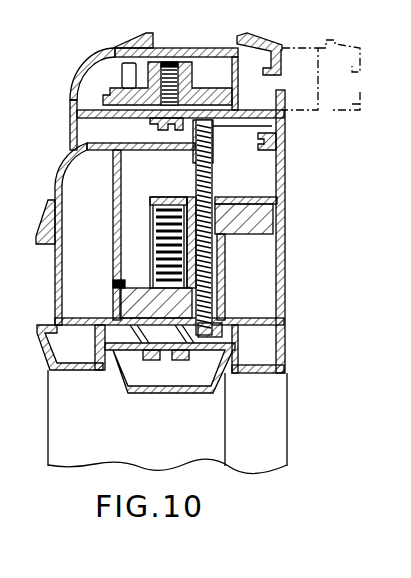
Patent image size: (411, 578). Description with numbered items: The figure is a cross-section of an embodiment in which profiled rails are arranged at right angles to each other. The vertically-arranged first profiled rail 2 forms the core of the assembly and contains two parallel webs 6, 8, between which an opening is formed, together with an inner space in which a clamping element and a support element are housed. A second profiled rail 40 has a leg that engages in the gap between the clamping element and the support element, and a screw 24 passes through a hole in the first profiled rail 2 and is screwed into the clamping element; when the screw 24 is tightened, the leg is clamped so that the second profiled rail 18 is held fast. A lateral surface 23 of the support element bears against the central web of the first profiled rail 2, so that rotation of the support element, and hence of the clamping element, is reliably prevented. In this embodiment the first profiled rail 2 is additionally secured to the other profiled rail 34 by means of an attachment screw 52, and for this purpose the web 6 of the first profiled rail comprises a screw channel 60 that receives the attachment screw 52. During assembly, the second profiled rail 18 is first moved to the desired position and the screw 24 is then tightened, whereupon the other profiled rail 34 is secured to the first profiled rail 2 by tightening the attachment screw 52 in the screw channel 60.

The first profiled rail 2 is at (74, 85).
The screw 24 is at (180, 50).
The second profiled rail 18 is at (260, 40).
The web 6 is at (117, 119).
The attachment screw 52 is at (190, 176).
The screw channel 60 is at (282, 133).
The second profiled rail 40 is at (283, 168).
The web 8 is at (283, 205).
The other profiled rail 34 is at (113, 218).
The lateral surface 23 is at (118, 301).